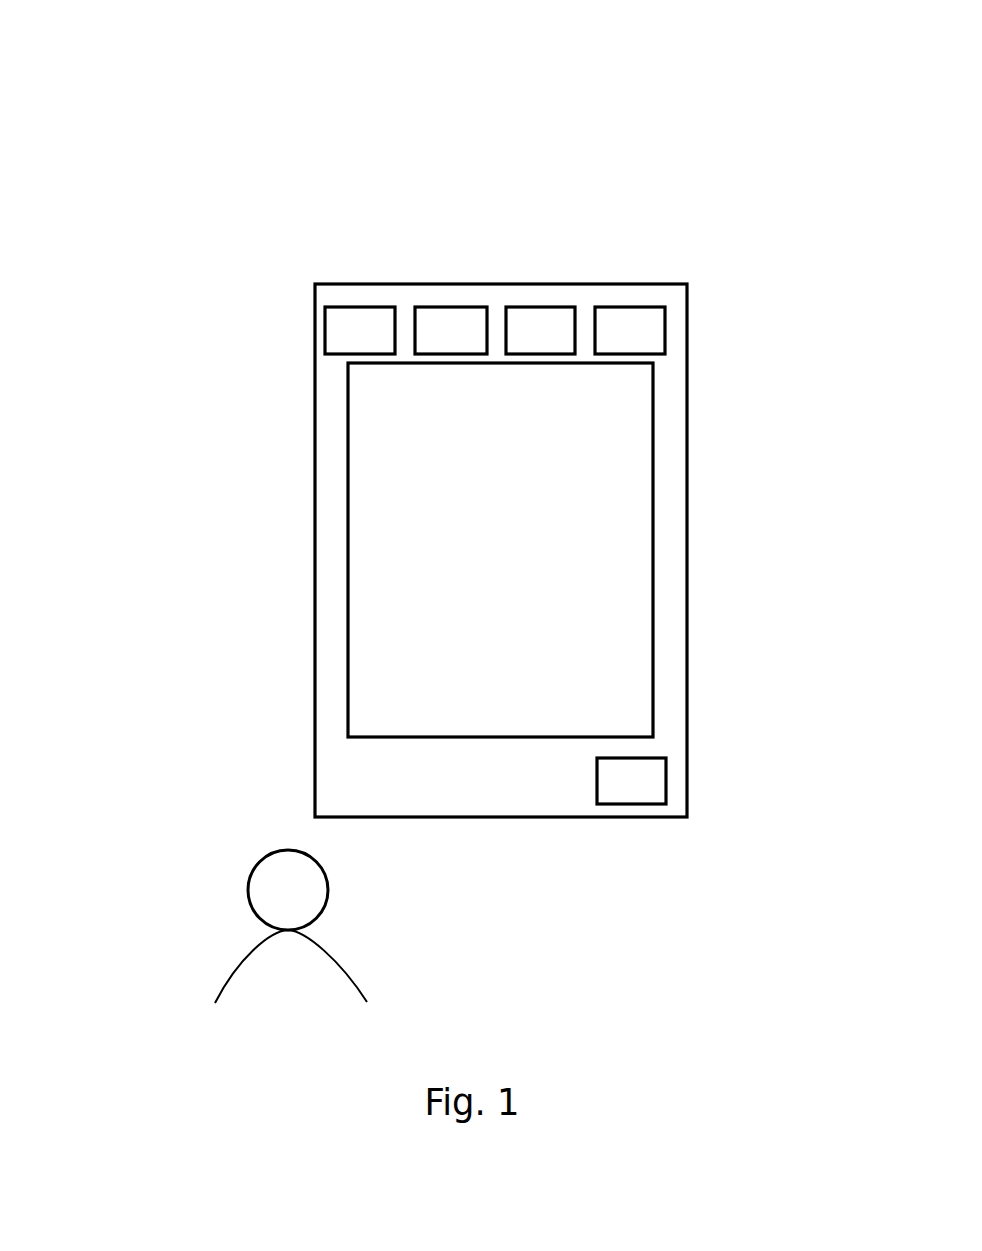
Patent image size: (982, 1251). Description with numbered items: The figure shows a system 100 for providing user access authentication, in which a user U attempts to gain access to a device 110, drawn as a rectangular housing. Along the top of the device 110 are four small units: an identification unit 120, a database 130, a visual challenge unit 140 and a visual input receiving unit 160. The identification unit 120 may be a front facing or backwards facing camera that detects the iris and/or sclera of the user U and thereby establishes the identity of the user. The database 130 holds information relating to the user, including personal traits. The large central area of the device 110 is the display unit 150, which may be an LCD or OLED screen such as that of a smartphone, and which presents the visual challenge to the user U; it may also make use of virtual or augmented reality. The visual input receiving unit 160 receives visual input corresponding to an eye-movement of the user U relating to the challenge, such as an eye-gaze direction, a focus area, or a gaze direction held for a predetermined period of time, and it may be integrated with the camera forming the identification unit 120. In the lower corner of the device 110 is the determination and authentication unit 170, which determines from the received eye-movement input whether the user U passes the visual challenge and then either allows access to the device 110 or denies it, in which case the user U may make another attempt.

The system 100 is at (754, 134).
The device 110 is at (325, 283).
The identification unit 120 is at (325, 332).
The database 130 is at (450, 307).
The visual challenge unit 140 is at (540, 307).
The display unit 150 is at (348, 550).
The visual input receiving unit 160 is at (630, 307).
The determination and authentication unit 170 is at (633, 805).
The user U is at (222, 944).